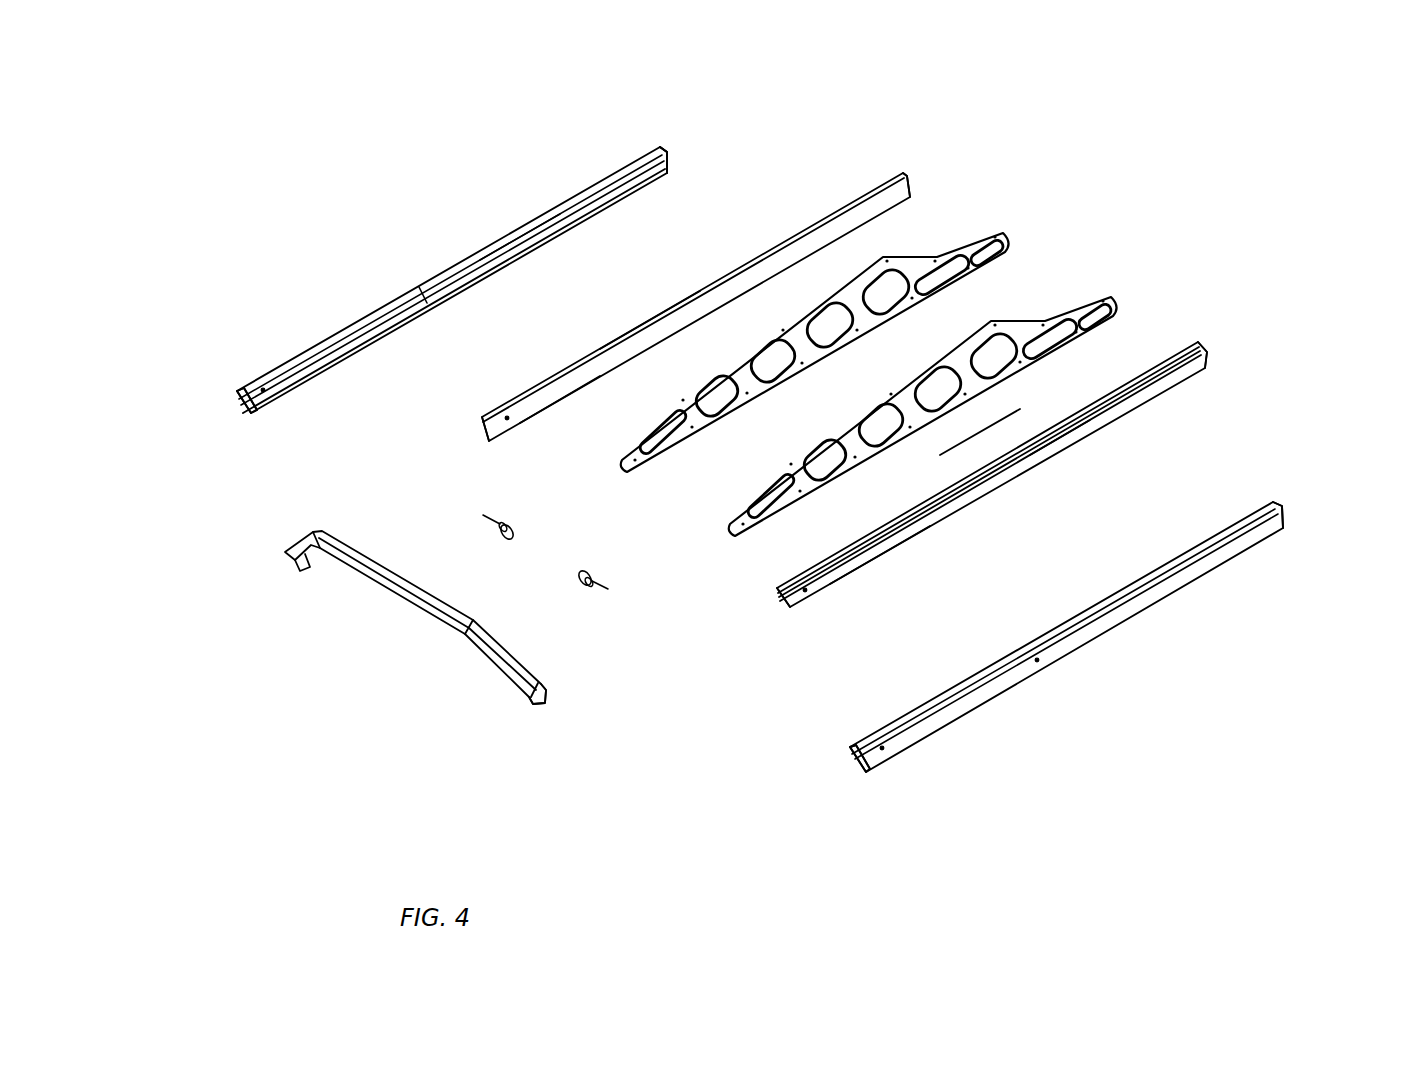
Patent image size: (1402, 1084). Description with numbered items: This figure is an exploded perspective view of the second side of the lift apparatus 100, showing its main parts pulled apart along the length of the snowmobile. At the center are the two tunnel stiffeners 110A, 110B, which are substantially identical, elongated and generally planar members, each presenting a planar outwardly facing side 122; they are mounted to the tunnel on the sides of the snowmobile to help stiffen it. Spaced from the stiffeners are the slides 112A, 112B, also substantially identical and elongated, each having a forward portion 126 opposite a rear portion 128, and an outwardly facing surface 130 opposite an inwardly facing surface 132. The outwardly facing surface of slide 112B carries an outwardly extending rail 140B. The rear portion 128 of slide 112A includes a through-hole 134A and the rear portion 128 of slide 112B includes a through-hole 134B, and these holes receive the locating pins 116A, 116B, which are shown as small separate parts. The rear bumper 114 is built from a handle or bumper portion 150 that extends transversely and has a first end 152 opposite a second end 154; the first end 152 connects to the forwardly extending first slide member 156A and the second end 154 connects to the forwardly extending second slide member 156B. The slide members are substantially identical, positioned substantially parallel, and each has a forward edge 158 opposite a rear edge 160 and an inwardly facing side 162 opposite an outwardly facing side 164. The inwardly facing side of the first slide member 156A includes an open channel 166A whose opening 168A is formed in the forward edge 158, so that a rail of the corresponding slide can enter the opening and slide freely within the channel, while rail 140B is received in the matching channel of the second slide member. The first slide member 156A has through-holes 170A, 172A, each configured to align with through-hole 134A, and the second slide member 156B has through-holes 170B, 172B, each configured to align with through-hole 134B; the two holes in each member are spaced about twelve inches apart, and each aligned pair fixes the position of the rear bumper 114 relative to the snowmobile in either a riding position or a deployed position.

The lift apparatus 100 is at (306, 150).
The rear bumper 114 is at (1045, 799).
The tunnel stiffener 110A is at (1005, 241).
The tunnel stiffener 110B is at (1114, 301).
The slide 112A is at (735, 272).
The slide 112B is at (832, 586).
The locating pin 116A is at (486, 525).
The locating pin 116B is at (597, 590).
The outwardly facing side 122 is at (718, 367).
The forward portion 126 is at (908, 186).
The rear portion 128 is at (483, 428).
The outwardly facing surface 130 is at (650, 318).
The inwardly facing surface 132 is at (558, 385).
The through-hole 134A is at (505, 417).
The through-hole 134B is at (810, 603).
The rail 140B is at (1062, 441).
The bumper portion 150 is at (375, 573).
The first end 152 is at (292, 570).
The second end 154 is at (542, 707).
The first slide member 156A is at (345, 332).
The second slide member 156B is at (1200, 566).
The forward edge 158 is at (663, 144).
The rear edge 160 is at (237, 405).
The inwardly facing side 162 is at (392, 312).
The outwardly facing side 164 is at (618, 163).
The channel 166A is at (513, 245).
The opening 168A is at (669, 165).
The through-hole 170A is at (263, 388).
The through-hole 170B is at (884, 750).
The through-hole 172A is at (421, 290).
The through-hole 172B is at (1039, 662).